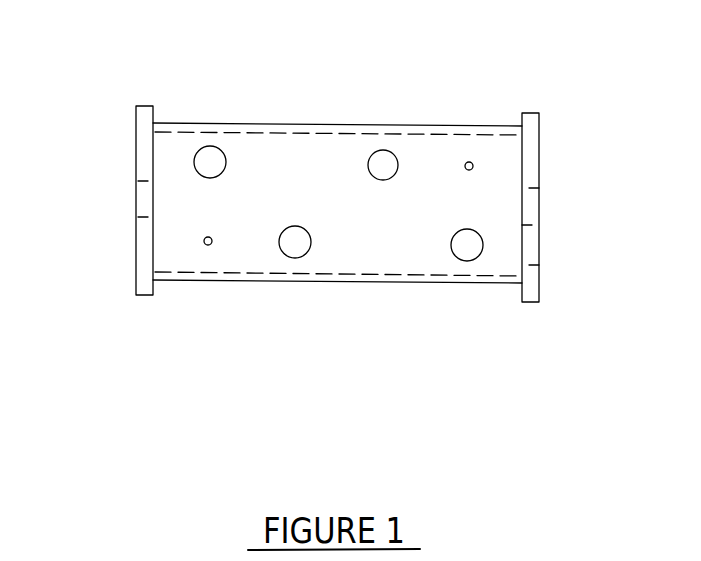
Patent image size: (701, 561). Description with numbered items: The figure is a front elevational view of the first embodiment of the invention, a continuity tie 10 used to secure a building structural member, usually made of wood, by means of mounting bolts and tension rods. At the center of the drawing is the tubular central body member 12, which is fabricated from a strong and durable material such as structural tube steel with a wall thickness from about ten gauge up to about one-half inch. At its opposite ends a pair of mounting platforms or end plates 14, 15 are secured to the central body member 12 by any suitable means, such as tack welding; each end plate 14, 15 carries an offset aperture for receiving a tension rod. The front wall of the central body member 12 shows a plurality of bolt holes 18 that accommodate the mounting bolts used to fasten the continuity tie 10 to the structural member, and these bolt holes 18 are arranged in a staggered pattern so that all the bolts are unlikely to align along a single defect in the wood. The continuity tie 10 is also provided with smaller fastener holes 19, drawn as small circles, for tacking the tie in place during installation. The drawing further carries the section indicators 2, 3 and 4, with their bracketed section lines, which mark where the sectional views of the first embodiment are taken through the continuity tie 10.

The continuity tie 10 is at (320, 294).
The tubular central body member 12 is at (574, 88).
The end plate 14 is at (100, 184).
The end plate 15 is at (603, 192).
The bolt holes 18 is at (393, 418).
The fastener holes 19 is at (256, 218).
The section line 2- 2 is at (586, 86).
The section line 3- 3 is at (83, 309).
The section line 4- 4 is at (228, 74).